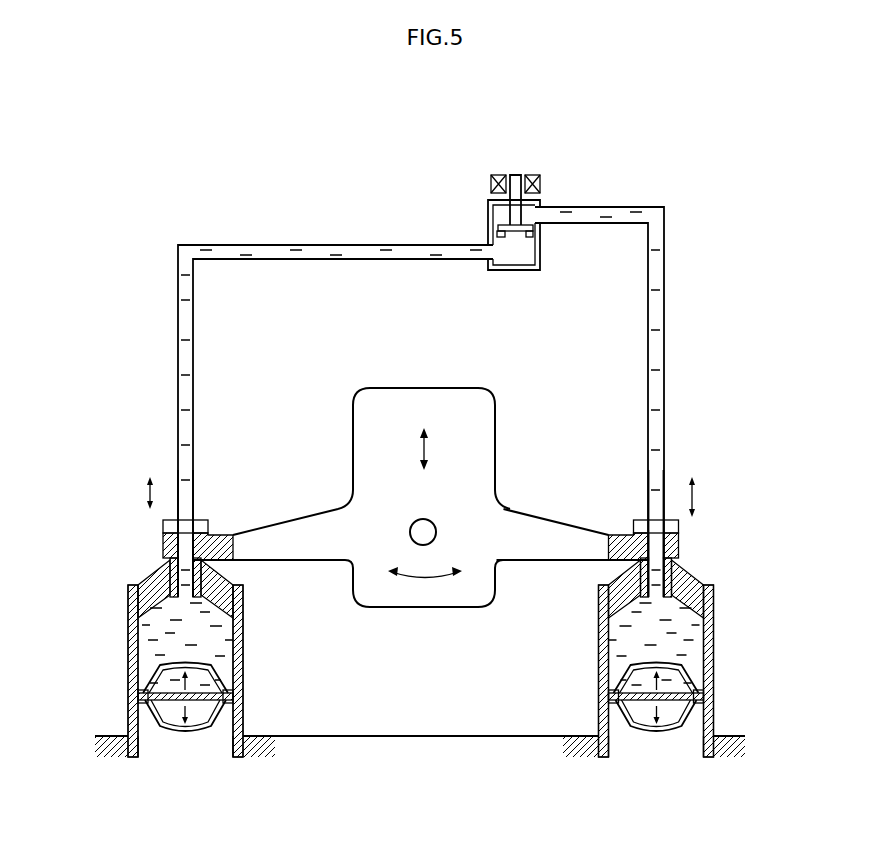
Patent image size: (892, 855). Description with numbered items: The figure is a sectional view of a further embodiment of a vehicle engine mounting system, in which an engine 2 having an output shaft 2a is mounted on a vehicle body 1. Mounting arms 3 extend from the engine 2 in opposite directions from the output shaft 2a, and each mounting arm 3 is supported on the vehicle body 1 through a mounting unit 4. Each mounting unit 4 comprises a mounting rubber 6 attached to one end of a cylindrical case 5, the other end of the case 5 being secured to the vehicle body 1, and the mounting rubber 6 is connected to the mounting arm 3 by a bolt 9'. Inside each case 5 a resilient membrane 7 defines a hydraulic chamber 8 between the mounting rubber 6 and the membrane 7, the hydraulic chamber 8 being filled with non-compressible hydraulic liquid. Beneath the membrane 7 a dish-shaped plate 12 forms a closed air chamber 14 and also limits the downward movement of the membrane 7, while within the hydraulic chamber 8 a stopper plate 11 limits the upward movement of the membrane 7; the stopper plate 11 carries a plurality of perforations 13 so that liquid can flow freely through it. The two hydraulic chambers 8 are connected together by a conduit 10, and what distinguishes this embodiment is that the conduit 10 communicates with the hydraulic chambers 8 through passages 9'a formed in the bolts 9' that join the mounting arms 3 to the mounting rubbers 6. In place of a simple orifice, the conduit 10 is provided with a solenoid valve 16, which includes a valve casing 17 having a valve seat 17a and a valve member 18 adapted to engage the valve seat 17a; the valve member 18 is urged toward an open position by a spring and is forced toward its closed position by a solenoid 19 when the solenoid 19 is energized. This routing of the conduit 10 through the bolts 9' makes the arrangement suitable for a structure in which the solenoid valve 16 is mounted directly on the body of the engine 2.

The vehicle body 1 is at (262, 750).
The engine 2 is at (478, 386).
The output shaft 2a is at (436, 519).
The mounting arm 3 is at (297, 514).
The mounting unit 4 is at (125, 594).
The cylindrical case 5 is at (128, 612).
The mounting rubber 6 is at (158, 578).
The resilient membrane 7 is at (162, 694).
The hydraulic chamber 8 is at (215, 638).
The bolt 9' is at (421, 525).
The passage 9'a is at (420, 523).
The conduit 10 is at (294, 260).
The stopper plate 11 is at (217, 675).
The dish-shaped plate 12 is at (157, 735).
The perforation 13 is at (162, 666).
The closed air chamber 14 is at (198, 715).
The solenoid valve 16 is at (483, 270).
The valve casing 17 is at (517, 272).
The valve seat 17a is at (497, 228).
The valve member 18 is at (515, 175).
The solenoid 19 is at (538, 182).